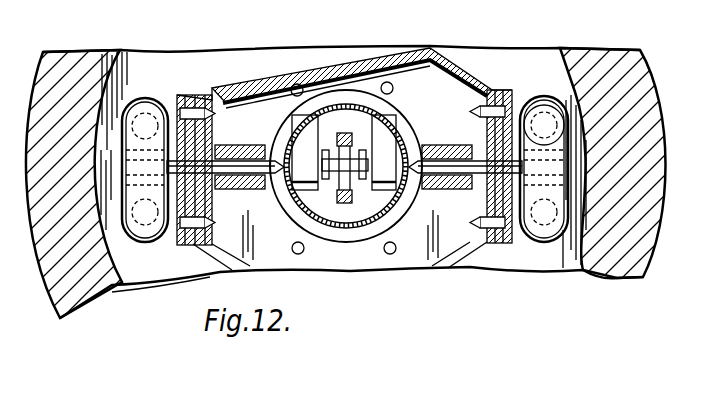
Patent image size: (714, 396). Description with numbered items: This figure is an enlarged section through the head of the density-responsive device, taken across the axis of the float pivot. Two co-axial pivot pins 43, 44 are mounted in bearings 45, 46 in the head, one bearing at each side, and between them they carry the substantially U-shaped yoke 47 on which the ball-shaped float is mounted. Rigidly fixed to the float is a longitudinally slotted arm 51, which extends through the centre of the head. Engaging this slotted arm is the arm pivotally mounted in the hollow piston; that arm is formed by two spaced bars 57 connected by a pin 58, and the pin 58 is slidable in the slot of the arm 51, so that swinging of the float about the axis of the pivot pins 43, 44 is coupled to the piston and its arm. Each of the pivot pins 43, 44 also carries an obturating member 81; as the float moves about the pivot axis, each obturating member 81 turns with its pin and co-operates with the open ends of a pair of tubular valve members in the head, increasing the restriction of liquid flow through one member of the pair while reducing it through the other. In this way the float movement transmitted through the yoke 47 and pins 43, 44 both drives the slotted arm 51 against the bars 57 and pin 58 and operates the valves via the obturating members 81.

The pivot pin 43 is at (248, 160).
The pivot pin 44 is at (496, 142).
The bearing 45 is at (180, 207).
The bearing 46 is at (535, 130).
The U-shaped yoke 47 is at (443, 150).
The longitudinally slotted arm 51 is at (345, 135).
The spaced bars 57 is at (327, 180).
The pin 58 is at (347, 203).
The obturating member 81 is at (133, 287).